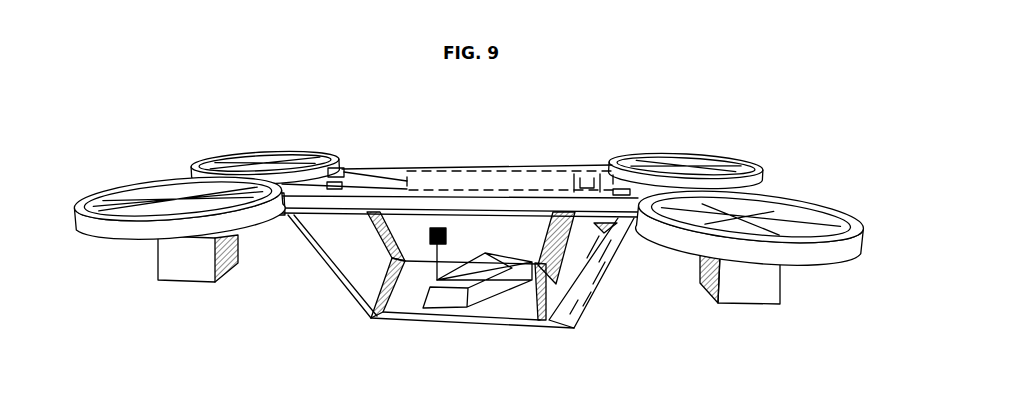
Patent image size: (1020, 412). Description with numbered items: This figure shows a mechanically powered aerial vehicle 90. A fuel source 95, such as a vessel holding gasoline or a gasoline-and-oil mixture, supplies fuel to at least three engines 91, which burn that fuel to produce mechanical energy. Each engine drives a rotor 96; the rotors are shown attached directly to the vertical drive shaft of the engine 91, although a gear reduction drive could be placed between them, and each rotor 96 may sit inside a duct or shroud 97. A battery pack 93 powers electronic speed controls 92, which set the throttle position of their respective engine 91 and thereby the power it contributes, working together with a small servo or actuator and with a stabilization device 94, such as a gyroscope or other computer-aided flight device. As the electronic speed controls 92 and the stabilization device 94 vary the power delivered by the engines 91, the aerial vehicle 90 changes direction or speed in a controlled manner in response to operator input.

The mechanically powered aerial vehicle 90 is at (796, 110).
The engine 91 is at (163, 262).
The electronic speed control 92 is at (340, 168).
The battery pack 93 is at (500, 178).
The stabilization device 94 is at (592, 176).
The fuel source 95 is at (573, 303).
The rotor 96 is at (98, 212).
The duct or shroud 97 is at (853, 246).